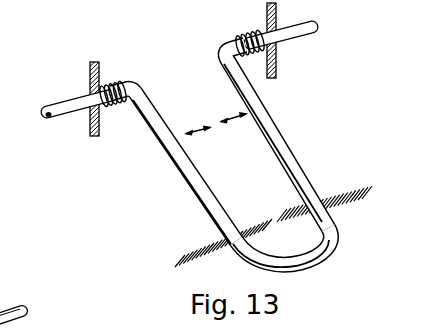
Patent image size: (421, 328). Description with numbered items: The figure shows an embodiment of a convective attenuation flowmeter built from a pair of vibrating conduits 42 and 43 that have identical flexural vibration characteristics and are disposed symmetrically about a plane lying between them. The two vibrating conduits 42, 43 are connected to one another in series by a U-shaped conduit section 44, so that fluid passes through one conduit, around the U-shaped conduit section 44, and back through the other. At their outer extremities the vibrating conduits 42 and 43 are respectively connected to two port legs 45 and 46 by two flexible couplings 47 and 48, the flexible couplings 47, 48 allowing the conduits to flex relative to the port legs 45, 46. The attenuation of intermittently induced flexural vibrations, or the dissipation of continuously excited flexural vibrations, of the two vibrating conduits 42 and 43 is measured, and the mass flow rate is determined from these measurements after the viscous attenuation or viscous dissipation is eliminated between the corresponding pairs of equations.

The vibrating conduit 42 is at (290, 143).
The vibrating conduit 43 is at (174, 169).
The U-shaped conduit section 44 is at (330, 263).
The port leg 45 is at (293, 45).
The port leg 46 is at (73, 119).
The flexible coupling 47 is at (248, 36).
The flexible coupling 48 is at (111, 82).